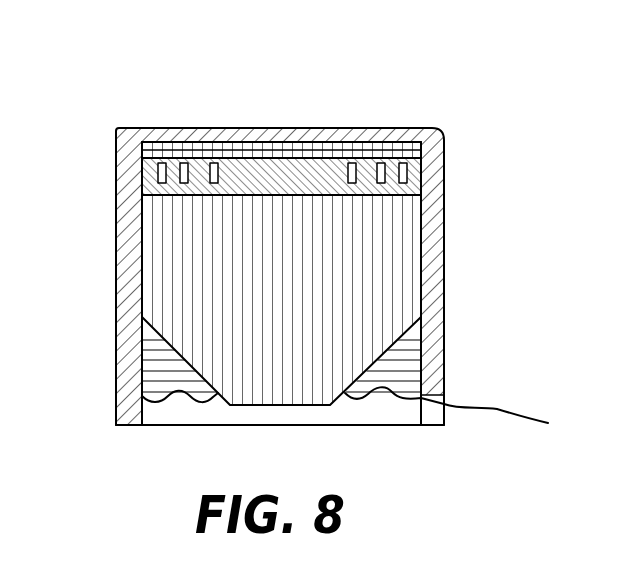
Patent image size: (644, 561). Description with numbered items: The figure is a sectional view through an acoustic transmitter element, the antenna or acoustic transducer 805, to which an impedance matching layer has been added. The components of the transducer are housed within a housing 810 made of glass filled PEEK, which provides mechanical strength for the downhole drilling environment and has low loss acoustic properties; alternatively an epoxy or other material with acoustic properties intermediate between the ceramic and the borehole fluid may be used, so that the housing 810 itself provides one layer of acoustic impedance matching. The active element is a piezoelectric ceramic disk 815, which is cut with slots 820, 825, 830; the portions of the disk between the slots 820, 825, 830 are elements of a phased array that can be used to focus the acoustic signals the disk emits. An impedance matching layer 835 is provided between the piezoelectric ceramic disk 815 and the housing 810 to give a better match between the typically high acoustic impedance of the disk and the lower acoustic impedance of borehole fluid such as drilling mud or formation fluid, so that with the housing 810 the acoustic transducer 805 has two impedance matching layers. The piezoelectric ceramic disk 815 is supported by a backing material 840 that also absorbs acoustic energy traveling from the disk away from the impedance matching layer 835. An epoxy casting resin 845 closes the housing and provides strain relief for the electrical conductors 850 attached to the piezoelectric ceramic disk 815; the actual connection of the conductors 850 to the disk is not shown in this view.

The acoustic transducer 805 is at (131, 52).
The housing 810 is at (445, 328).
The piezoelectric ceramic disk 815 is at (445, 163).
The slot 820 is at (217, 167).
The slot 825 is at (187, 167).
The slot 830 is at (162, 166).
The impedance matching layer 835 is at (150, 148).
The backing material 840 is at (393, 250).
The epoxy casting resin 845 is at (408, 378).
The electrical conductors 850 is at (497, 409).